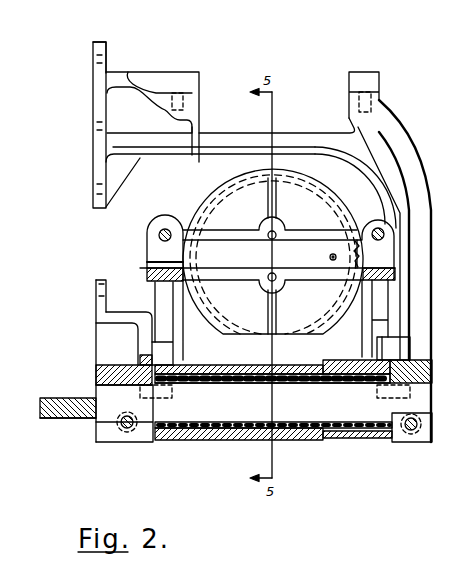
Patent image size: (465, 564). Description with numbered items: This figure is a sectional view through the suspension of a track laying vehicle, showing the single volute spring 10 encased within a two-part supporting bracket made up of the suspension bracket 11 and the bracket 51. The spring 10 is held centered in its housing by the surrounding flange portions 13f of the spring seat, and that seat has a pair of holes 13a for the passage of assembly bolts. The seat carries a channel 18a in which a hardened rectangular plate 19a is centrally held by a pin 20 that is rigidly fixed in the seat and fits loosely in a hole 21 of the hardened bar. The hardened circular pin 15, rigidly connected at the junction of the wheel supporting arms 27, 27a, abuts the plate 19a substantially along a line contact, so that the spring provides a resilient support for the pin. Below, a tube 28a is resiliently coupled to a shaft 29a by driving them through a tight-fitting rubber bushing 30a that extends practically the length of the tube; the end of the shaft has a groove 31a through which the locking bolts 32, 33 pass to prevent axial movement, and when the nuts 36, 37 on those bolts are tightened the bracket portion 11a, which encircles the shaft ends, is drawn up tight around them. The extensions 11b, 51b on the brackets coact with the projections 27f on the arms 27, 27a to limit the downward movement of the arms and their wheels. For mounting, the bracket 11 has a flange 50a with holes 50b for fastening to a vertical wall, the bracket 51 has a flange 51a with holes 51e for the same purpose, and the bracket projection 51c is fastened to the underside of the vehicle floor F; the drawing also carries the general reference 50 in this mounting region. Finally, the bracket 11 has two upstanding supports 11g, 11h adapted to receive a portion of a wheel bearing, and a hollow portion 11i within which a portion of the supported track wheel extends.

The volute spring 10 is at (312, 183).
The suspension bracket 11 is at (427, 279).
The suspension bracket portion 11a is at (97, 367).
The extension 11b is at (390, 350).
The upstanding support 11g is at (373, 78).
The upstanding support 11h is at (194, 77).
The hollow portion 11i is at (277, 114).
The holes 13a is at (276, 268).
The flange portions 13f is at (343, 208).
The pin 15 is at (388, 256).
The channel 18a is at (247, 270).
The hardened rectangular plate 19a is at (230, 250).
The pin 20 is at (332, 261).
The hole 21 is at (325, 285).
The wheel supporting arm 27 is at (396, 229).
The wheel supporting arm 27a is at (148, 232).
The projection 27f is at (387, 327).
The tube 28a is at (263, 440).
The shaft 29a is at (272, 398).
The rubber bushing 30a is at (213, 384).
The groove 31a is at (430, 443).
The locking bolt 32 is at (412, 430).
The locking bolt 33 is at (132, 437).
The nut 36 is at (422, 415).
The nut 37 is at (117, 419).
The support 50 is at (125, 312).
The flange 50a is at (92, 120).
The holes 50b is at (92, 52).
The bracket 51 is at (100, 318).
The flange 51a is at (95, 307).
The extension 51b is at (158, 348).
The bracket projection 51c is at (65, 399).
The holes 51e is at (94, 292).
The vehicle floor F is at (45, 398).